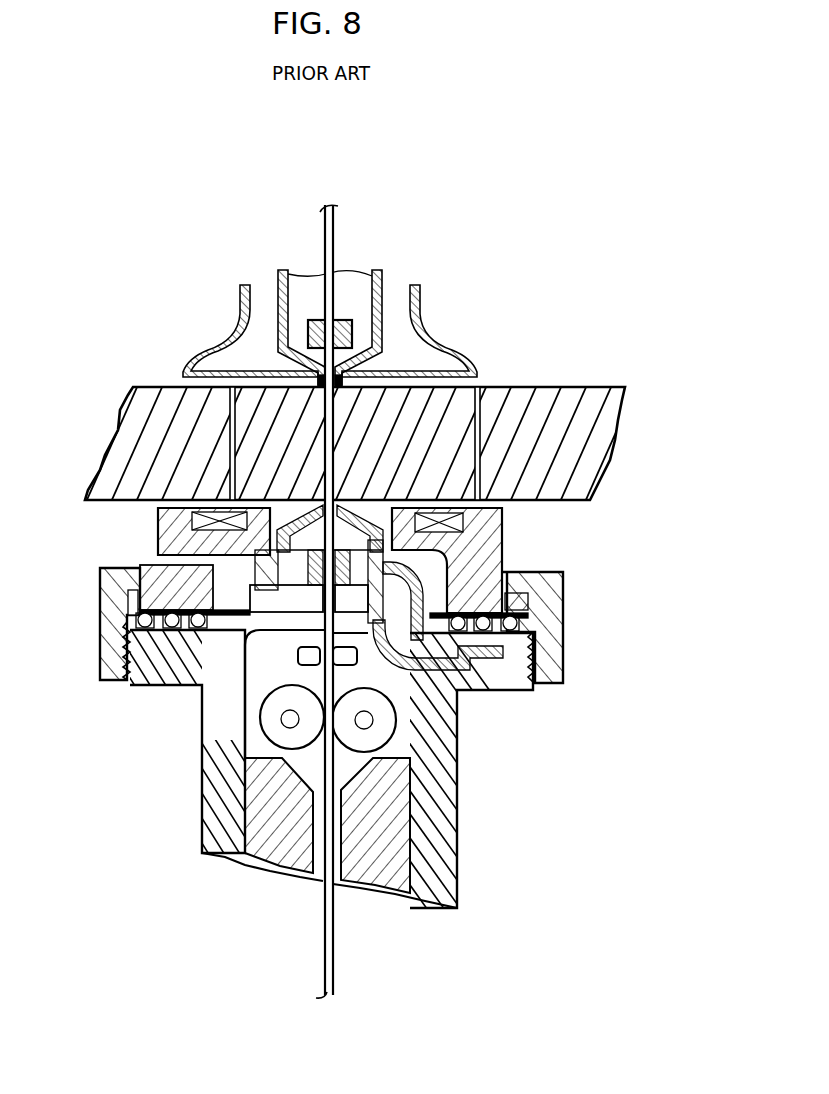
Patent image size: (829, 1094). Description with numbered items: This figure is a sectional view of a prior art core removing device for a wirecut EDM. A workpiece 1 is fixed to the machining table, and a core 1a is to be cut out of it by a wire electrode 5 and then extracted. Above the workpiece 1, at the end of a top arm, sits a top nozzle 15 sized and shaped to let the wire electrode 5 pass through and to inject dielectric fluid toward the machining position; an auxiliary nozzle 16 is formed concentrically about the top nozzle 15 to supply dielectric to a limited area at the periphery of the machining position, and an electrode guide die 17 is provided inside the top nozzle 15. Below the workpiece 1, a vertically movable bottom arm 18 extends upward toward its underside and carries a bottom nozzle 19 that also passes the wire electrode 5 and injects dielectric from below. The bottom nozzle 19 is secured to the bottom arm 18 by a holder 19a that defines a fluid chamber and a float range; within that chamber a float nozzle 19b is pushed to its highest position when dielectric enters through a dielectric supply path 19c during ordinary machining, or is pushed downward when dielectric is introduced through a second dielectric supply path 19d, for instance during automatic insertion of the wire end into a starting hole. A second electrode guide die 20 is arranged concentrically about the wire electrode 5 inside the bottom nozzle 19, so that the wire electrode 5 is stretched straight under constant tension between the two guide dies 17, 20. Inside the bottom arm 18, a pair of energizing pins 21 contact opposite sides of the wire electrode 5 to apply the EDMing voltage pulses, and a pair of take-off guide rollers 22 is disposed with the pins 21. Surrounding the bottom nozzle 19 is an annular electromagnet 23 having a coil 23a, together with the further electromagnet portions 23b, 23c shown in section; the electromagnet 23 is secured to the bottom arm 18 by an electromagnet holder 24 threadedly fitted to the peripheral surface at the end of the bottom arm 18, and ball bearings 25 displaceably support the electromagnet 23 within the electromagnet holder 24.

The workpiece 1 is at (289, 319).
The core 1a is at (470, 387).
The wire electrode 5 is at (338, 232).
The top nozzle 15 is at (383, 292).
The auxiliary nozzle 16 is at (423, 312).
The electrode guide die 17 is at (352, 335).
The bottom arm 18 is at (457, 867).
The bottom nozzle 19 is at (145, 585).
The holder 19a is at (150, 572).
The float nozzle 19b is at (255, 556).
The dielectric supply path 19c is at (420, 668).
The dielectric supply path 19d is at (445, 655).
The electrode guide die 20 is at (112, 662).
The energizing pins 21 is at (202, 700).
The take-off guide rollers 22 is at (262, 722).
The electromagnet 23 is at (505, 545).
The coil 23a is at (503, 525).
The retaining bar 23b is at (527, 598).
The left coil block 23c is at (170, 545).
The electromagnet holder 24 is at (555, 648).
The ball bearings 25 is at (135, 612).